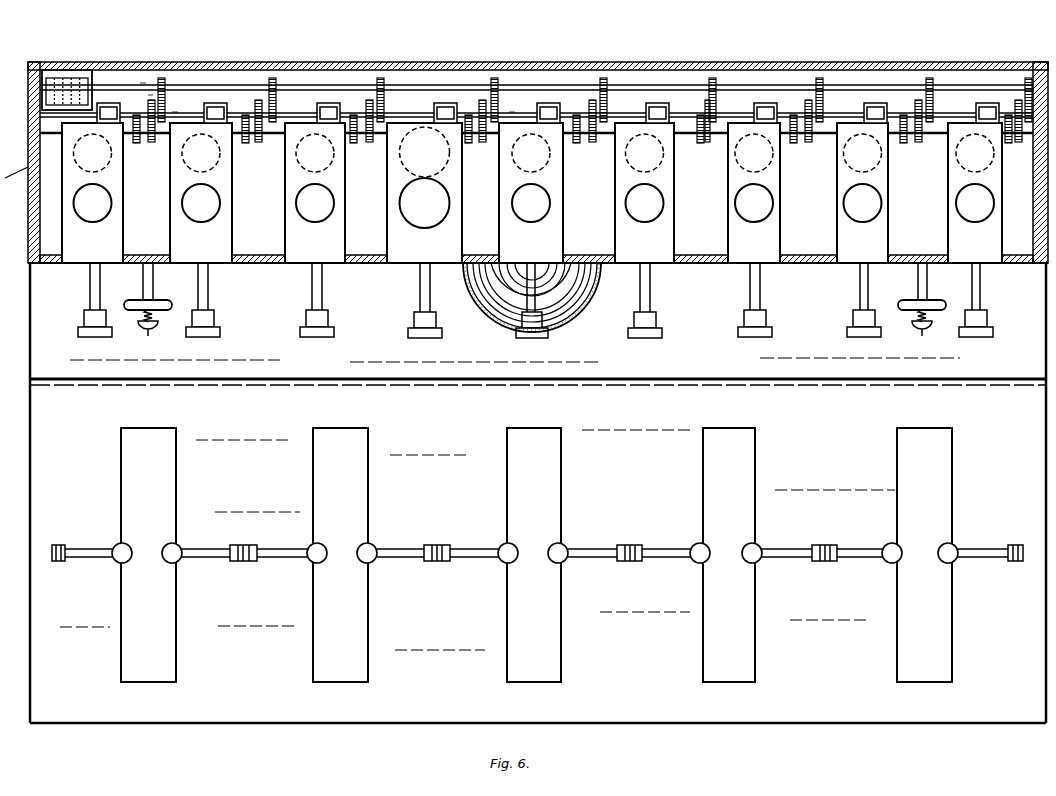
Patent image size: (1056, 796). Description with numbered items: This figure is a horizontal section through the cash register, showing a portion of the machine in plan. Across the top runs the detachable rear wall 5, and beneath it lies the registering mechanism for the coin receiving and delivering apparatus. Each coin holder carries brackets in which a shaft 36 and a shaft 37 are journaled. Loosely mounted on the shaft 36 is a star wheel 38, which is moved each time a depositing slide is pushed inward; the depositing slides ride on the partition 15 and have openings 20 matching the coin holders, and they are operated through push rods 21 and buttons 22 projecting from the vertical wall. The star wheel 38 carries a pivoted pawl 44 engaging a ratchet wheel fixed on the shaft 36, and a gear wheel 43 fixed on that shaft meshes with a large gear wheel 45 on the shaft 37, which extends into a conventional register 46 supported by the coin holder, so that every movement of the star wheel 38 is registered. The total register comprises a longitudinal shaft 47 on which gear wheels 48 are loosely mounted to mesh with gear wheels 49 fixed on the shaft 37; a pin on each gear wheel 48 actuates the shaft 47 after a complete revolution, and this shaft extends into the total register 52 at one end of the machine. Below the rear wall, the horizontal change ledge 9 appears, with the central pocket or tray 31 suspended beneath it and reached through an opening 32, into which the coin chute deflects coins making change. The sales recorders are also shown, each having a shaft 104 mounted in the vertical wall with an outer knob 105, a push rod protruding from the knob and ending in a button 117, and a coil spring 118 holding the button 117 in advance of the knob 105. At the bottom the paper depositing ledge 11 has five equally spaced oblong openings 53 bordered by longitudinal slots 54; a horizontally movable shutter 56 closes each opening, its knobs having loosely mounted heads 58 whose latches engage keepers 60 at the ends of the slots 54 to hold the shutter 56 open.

The rear wall 5 is at (300, 63).
The horizontal change ledge 9 is at (515, 365).
The horizontal paper depositing ledge 11 is at (446, 679).
The partition 15 is at (532, 193).
The openings 20 is at (80, 207).
The push rods 21 is at (91, 284).
The buttons 22 is at (100, 338).
The pocket or tray 31 is at (513, 305).
The opening 32 is at (584, 302).
The shaft 36 is at (170, 136).
The shaft 37 is at (402, 110).
The star wheel 38 is at (137, 115).
The gear wheel 43 is at (152, 100).
The pivoted pawl 44 is at (142, 83).
The large gear wheel 45 is at (150, 95).
The register 46 is at (110, 103).
The longitudinal shaft 47 is at (102, 83).
The gear wheels 48 is at (165, 85).
The gear wheels 49 is at (175, 112).
The total register 52 is at (85, 70).
The oblong openings 53 is at (176, 660).
The longitudinal slots 54 is at (195, 551).
The shutter 56 is at (496, 540).
The heads 58 is at (119, 543).
The keepers 60 is at (60, 545).
The shaft 104 is at (147, 286).
The knob 105 is at (162, 302).
The button 117 is at (150, 336).
The coil spring 118 is at (154, 316).